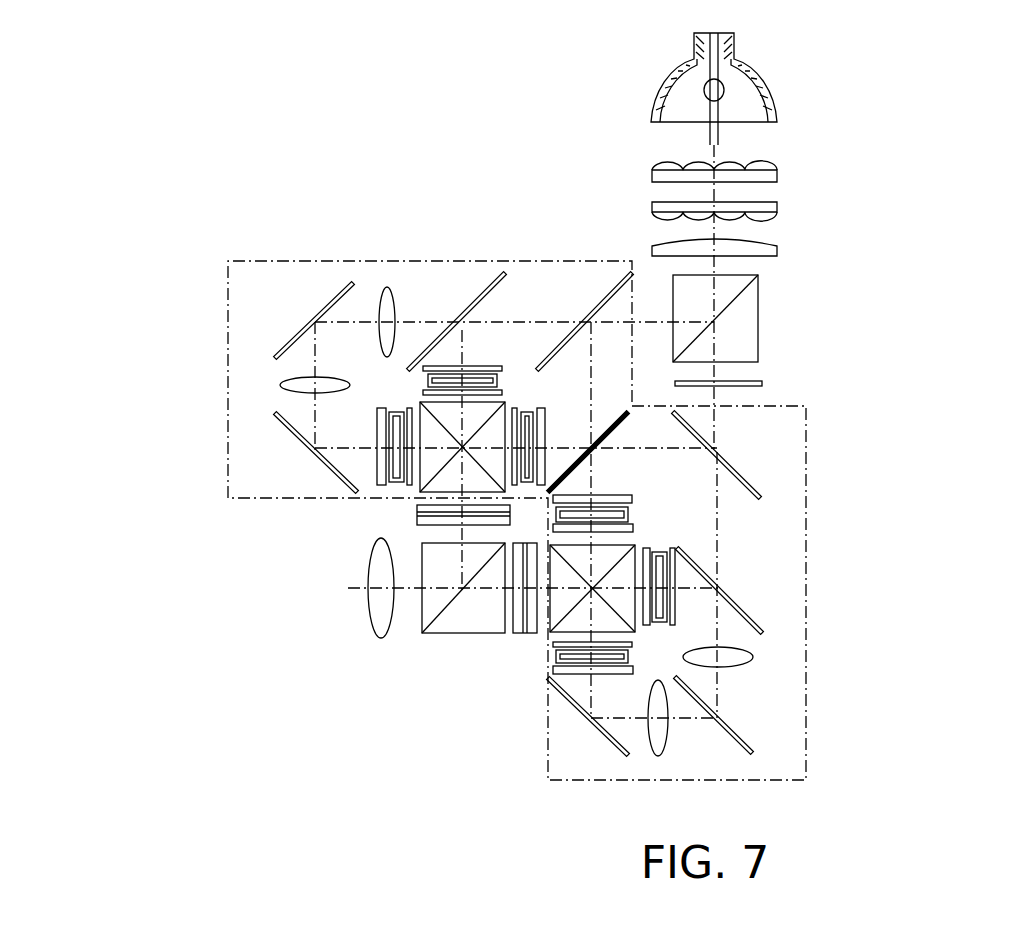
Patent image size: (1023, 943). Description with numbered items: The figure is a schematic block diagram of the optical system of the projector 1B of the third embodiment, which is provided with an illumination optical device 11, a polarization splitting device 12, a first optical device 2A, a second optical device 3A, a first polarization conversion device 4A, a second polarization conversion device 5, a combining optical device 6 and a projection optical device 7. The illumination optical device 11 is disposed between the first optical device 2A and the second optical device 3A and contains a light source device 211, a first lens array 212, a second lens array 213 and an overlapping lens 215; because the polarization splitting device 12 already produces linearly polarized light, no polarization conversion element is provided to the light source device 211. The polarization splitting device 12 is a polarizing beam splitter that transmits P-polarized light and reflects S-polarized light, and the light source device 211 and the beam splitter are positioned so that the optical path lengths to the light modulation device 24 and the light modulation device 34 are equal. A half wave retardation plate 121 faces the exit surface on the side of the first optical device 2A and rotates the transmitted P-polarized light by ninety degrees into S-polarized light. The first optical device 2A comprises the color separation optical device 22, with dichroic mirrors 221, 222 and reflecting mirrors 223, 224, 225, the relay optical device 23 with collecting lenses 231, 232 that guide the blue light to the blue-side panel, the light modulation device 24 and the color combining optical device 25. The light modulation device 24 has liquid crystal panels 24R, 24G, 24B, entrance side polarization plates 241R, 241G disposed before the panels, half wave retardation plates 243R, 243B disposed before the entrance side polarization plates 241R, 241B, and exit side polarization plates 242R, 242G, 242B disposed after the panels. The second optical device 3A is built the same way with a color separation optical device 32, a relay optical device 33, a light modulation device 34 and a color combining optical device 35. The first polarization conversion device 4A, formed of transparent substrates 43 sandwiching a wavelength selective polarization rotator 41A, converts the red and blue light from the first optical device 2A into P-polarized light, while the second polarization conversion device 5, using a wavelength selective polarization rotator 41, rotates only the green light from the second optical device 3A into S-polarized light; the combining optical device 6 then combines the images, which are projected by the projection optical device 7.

The projector 1B is at (455, 131).
The illumination optical device 11 is at (913, 212).
The light source device 211 is at (760, 80).
The first lens array 212 is at (779, 176).
The second lens array 213 is at (779, 207).
The overlapping lens 215 is at (779, 245).
The polarization splitting device 12 is at (760, 302).
The half wave retardation plate 121 is at (764, 384).
The second optical device 3A is at (228, 332).
The first optical device 2A is at (808, 572).
The relay optical device 33 is at (385, 281).
The color separation optical device 32 is at (560, 273).
The color combining optical device 35 is at (428, 403).
The light modulation device 34 is at (514, 398).
The color separation optical device 22 is at (787, 477).
The dichroic mirror 221 is at (732, 468).
The dichroic mirror 222 is at (745, 616).
The reflecting mirror 223 is at (618, 422).
The relay optical device 23 is at (788, 647).
The collecting lens 231 is at (739, 667).
The collecting lens 232 is at (668, 740).
The reflecting mirror 224 is at (744, 741).
The reflecting mirror 225 is at (616, 745).
The wavelength selective polarization rotator 41 is at (414, 517).
The transparent substrates 43 is at (452, 526).
The second polarization conversion device 5 is at (403, 507).
The wavelength selective polarization rotator 41A is at (535, 620).
The first polarization conversion device 4A is at (506, 643).
The combining optical device 6 is at (432, 634).
The projection optical device 7 is at (364, 630).
The color combining optical device 25 is at (550, 545).
The light modulation device 24 is at (695, 509).
The liquid crystal panel 24R is at (629, 510).
The entrance side polarization plate 241R is at (628, 512).
The exit side polarization plate 242R is at (632, 530).
The half wave retardation plate 243R is at (615, 497).
The liquid crystal panel 24G is at (660, 628).
The entrance side polarization plate 241G is at (664, 598).
The exit side polarization plate 242G is at (646, 627).
The liquid crystal panel 24B is at (551, 660).
The entrance side polarization plate 241B is at (582, 676).
The exit side polarization plate 242B is at (551, 647).
The half wave retardation plate 243B is at (582, 676).